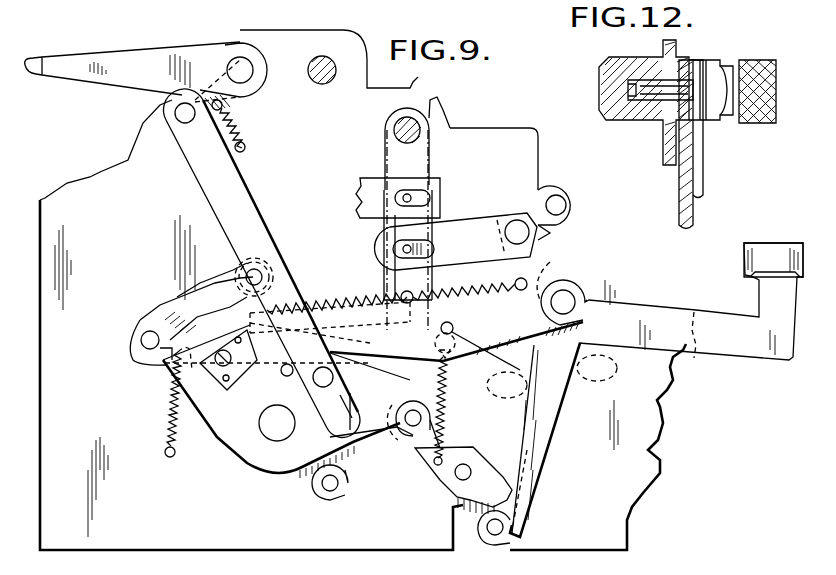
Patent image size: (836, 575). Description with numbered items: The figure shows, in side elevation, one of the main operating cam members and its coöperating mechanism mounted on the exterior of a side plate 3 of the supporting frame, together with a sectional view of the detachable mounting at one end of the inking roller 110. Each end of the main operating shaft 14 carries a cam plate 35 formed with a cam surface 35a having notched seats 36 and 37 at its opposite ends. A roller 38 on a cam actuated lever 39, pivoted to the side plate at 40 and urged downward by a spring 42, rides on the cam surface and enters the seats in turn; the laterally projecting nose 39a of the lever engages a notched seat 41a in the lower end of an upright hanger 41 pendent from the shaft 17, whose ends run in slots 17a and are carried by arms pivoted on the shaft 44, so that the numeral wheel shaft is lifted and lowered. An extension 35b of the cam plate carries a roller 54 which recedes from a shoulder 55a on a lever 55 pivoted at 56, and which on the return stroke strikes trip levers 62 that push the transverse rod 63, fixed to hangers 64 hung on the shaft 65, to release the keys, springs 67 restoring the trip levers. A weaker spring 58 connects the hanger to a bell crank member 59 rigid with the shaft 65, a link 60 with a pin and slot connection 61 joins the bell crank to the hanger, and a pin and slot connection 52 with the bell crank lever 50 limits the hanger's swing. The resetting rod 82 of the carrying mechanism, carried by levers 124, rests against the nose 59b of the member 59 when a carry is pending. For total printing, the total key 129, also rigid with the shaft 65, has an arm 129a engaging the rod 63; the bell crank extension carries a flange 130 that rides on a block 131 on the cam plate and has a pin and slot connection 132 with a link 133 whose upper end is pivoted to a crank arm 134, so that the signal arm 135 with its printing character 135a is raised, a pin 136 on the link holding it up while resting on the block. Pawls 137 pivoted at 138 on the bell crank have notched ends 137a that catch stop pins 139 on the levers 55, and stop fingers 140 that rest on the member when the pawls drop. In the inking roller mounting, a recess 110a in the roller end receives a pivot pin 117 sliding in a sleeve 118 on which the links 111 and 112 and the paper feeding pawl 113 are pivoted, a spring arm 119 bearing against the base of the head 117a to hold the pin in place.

In FIG. 9, the side plate 3 is at (69, 540).
In FIG. 9, the main operating shaft 14 is at (278, 442).
In FIG. 9, the shaft 17 is at (437, 115).
In FIG. 9, the slot 17a is at (412, 105).
In FIG. 9, the cam plate 35 is at (250, 466).
In FIG. 9, the cam surface 35a is at (185, 303).
In FIG. 9, the extension 35b is at (445, 470).
In FIG. 9, the notched seat 36 is at (247, 303).
In FIG. 9, the notched seat 37 is at (160, 349).
In FIG. 9, the roller 38 is at (246, 275).
In FIG. 9, the cam actuated lever 39 is at (200, 288).
In FIG. 9, the nose 39a is at (455, 375).
In FIG. 9, the pivot 40 is at (140, 338).
In FIG. 9, the hanger 41 is at (390, 138).
In FIG. 9, the notched seat 41a is at (548, 357).
In FIG. 9, the spring 42 is at (163, 422).
In FIG. 9, the shaft 44 is at (328, 60).
In FIG. 9, the bell crank lever 50 is at (360, 180).
In FIG. 9, the pin and slot connection 52 is at (428, 198).
In FIG. 9, the roller 54 is at (448, 430).
In FIG. 9, the lever 55 is at (358, 478).
In FIG. 9, the shoulder 55a is at (410, 408).
In FIG. 9, the pivot 56 is at (335, 488).
In FIG. 9, the spring 58 is at (452, 292).
In FIG. 9, the bell crank member 59 is at (552, 283).
In FIG. 9, the nose 59b is at (542, 236).
In FIG. 9, the link 60 is at (490, 222).
In FIG. 9, the pin and slot connection 61 is at (430, 243).
In FIG. 9, the trip lever 62 is at (505, 494).
In FIG. 9, the transverse rod 63 is at (512, 540).
In FIG. 9, the hanger 64 is at (480, 537).
In FIG. 9, the shaft 65 is at (576, 300).
In FIG. 9, the spring 67 is at (470, 450).
In FIG. 9, the resetting rod 82 is at (566, 206).
In FIG. 12, the inking roller 110 is at (607, 62).
In FIG. 12, the recess 110a is at (628, 90).
In FIG. 12, the link 111 is at (678, 48).
In FIG. 12, the link 112 is at (689, 230).
In FIG. 12, the paper feeding pawl 113 is at (679, 168).
In FIG. 12, the pivot pin 117 is at (640, 125).
In FIG. 12, the head 117a is at (757, 60).
In FIG. 12, the sleeve 118 is at (660, 130).
In FIG. 12, the spring arm 119 is at (703, 163).
In FIG. 9, the lever 124 is at (550, 192).
In FIG. 9, the total key 129 is at (770, 360).
In FIG. 9, the arm 129a is at (553, 408).
In FIG. 9, the flange 130 is at (222, 428).
In FIG. 9, the block 131 is at (197, 378).
In FIG. 9, the pin and slot connection 132 is at (318, 495).
In FIG. 9, the link 133 is at (197, 168).
In FIG. 9, the crank arm 134 is at (248, 95).
In FIG. 9, the signal arm 135 is at (170, 43).
In FIG. 9, the printing character 135a is at (42, 60).
In FIG. 9, the pin 136 is at (260, 422).
In FIG. 9, the pawl 137 is at (386, 285).
In FIG. 9, the notched end 137a is at (340, 300).
In FIG. 9, the pivot 138 is at (465, 350).
In FIG. 9, the stop pin 139 is at (375, 300).
In FIG. 9, the stop finger 140 is at (380, 275).